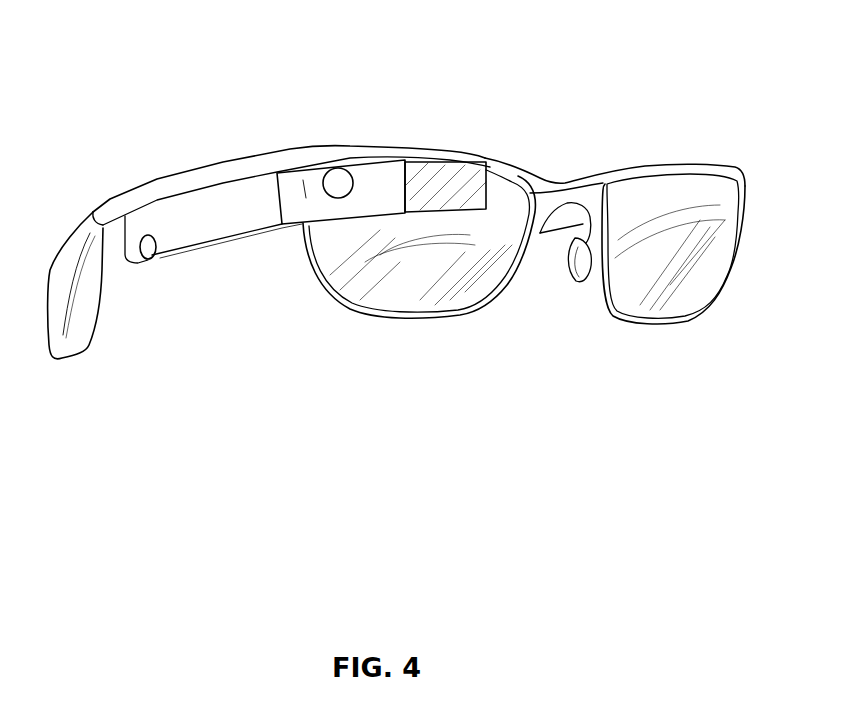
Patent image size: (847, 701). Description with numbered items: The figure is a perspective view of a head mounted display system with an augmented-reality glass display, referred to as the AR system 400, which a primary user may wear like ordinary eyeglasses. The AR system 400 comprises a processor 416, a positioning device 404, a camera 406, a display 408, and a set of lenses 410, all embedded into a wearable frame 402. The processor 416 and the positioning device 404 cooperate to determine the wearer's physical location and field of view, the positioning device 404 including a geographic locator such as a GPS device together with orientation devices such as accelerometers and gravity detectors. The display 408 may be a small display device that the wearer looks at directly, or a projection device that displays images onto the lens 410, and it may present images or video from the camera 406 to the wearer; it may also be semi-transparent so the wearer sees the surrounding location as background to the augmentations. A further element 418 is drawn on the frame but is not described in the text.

The AR system 400 is at (428, 199).
The wearable frame 402 is at (740, 167).
The positioning device 404 is at (158, 219).
The camera 406 is at (352, 171).
The display 408 is at (437, 212).
The lenses 410 is at (450, 293).
The processor 416 is at (237, 196).
The hinge button 418 is at (148, 260).